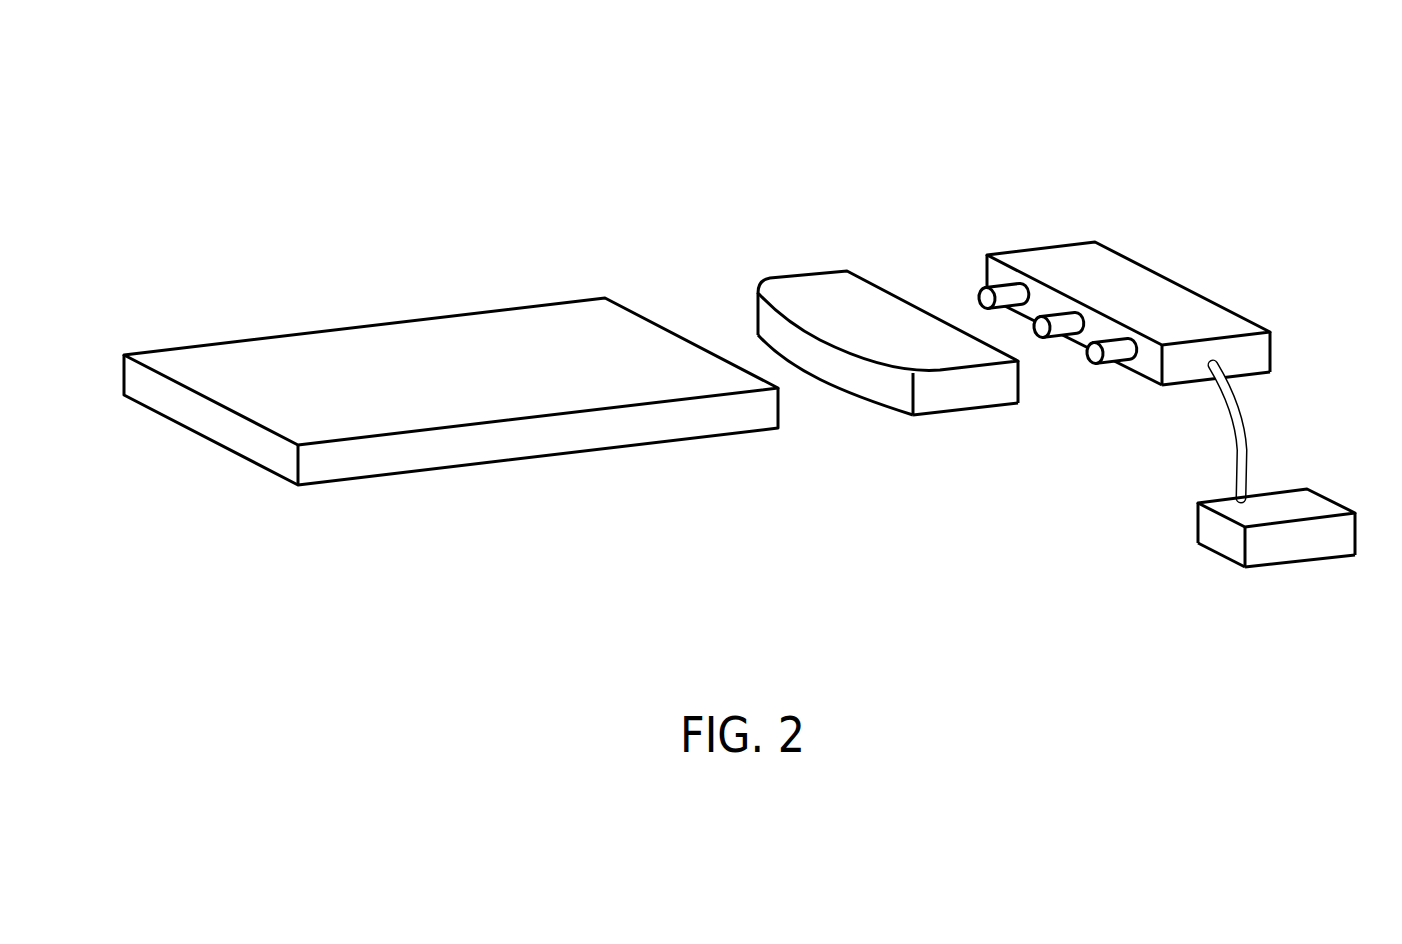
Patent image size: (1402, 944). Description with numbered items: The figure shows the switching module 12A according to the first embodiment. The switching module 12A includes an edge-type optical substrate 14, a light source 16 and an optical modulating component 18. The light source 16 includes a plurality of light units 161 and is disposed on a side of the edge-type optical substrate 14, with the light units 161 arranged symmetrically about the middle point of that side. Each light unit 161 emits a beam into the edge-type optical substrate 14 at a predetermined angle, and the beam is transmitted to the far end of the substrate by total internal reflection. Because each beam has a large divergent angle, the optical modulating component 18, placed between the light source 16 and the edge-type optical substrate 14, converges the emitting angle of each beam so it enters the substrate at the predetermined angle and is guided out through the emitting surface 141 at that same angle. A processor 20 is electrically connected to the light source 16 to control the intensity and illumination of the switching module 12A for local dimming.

The switching module 12A is at (613, 145).
The edge-type optical substrate 14 is at (451, 395).
The emitting surface 141 is at (385, 357).
The optical modulating component 18 is at (828, 303).
The light source 16 is at (1093, 315).
The light units 161 is at (988, 300).
The processor 20 is at (1230, 542).